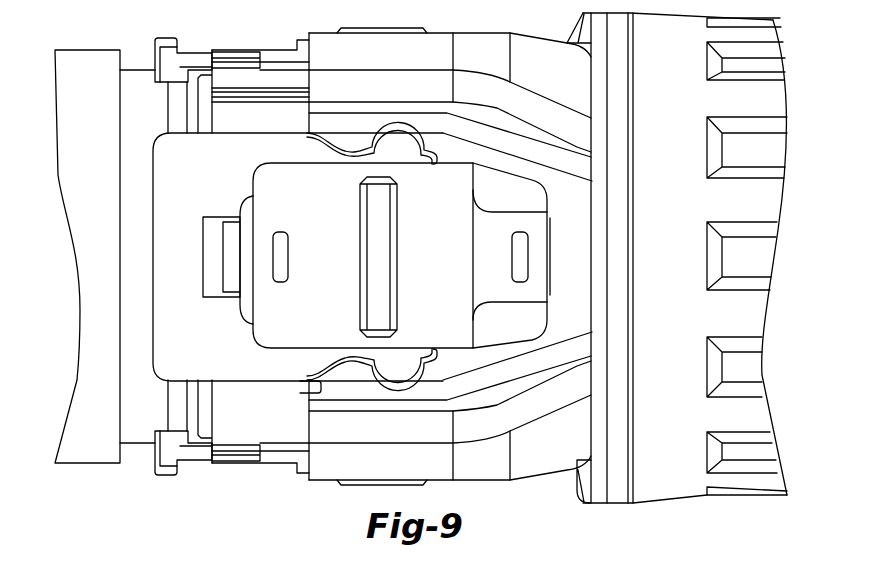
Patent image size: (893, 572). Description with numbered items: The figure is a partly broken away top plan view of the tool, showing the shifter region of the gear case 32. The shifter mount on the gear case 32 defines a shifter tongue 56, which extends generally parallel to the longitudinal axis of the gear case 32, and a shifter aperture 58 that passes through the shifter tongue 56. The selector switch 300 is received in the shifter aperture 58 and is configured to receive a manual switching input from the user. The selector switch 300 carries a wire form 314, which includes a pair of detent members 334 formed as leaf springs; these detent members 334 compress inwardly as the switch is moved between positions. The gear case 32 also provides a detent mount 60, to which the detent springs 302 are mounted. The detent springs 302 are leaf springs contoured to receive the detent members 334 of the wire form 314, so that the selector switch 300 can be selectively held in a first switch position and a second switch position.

The gear case 32 is at (480, 52).
The shifter tongue 56 is at (165, 188).
The shifter aperture 58 is at (213, 278).
The detent mount 60 is at (348, 125).
The selector switch 300 is at (278, 326).
The detent springs 302 is at (340, 376).
The wire form 314 is at (248, 204).
The detent members 334 is at (409, 361).